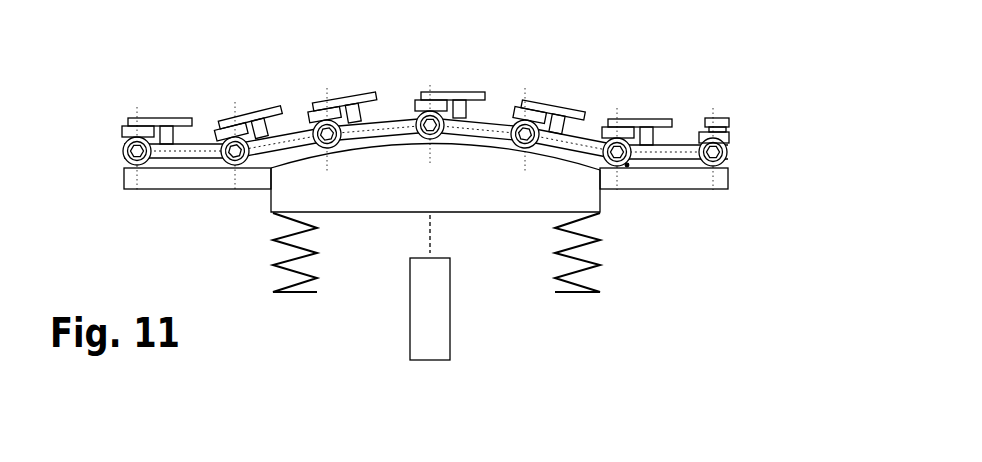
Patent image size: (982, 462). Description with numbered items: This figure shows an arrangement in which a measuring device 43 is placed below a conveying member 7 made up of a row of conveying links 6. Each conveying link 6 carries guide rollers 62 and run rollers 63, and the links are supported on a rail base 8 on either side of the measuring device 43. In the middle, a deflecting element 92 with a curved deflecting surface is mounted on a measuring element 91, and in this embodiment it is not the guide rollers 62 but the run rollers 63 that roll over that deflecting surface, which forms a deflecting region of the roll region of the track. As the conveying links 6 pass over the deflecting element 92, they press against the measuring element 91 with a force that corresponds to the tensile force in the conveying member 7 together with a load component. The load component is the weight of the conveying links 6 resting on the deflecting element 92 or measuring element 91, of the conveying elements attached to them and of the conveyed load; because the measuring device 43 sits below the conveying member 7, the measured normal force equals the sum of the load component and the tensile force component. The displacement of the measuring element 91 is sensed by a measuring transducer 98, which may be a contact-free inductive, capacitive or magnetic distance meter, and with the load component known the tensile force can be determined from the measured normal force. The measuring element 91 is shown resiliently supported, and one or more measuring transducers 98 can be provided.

The conveying link 6 is at (431, 146).
The conveying member 7 is at (752, 157).
The rail base 8 is at (683, 180).
The measuring device 43 is at (262, 238).
The guide roller 62 is at (420, 112).
The run roller 63 is at (415, 112).
The measuring element 91 is at (417, 193).
The deflecting element 92 is at (585, 188).
The measuring transducer 98 is at (430, 315).